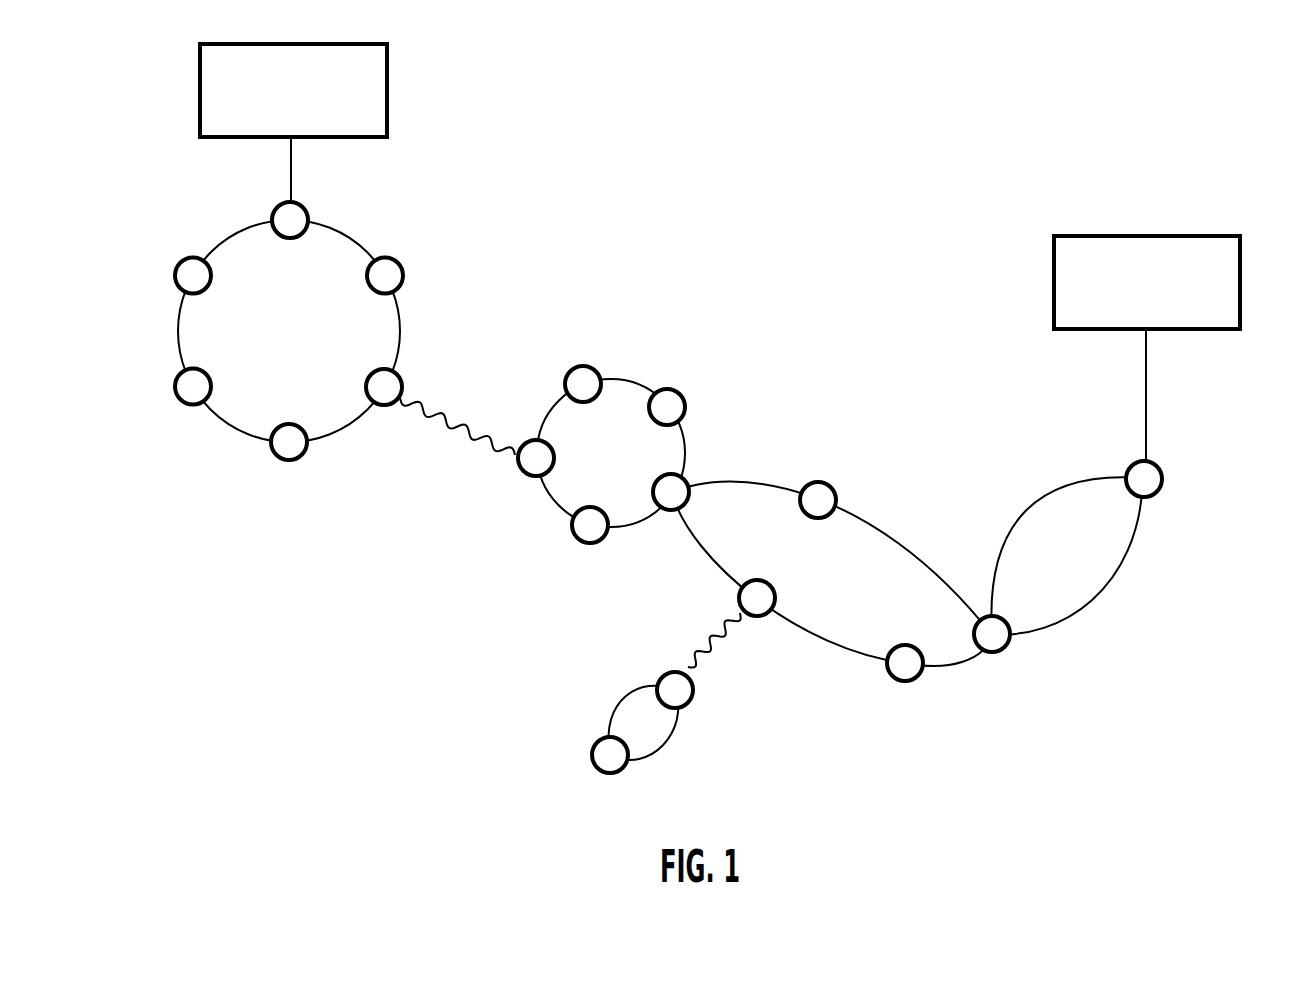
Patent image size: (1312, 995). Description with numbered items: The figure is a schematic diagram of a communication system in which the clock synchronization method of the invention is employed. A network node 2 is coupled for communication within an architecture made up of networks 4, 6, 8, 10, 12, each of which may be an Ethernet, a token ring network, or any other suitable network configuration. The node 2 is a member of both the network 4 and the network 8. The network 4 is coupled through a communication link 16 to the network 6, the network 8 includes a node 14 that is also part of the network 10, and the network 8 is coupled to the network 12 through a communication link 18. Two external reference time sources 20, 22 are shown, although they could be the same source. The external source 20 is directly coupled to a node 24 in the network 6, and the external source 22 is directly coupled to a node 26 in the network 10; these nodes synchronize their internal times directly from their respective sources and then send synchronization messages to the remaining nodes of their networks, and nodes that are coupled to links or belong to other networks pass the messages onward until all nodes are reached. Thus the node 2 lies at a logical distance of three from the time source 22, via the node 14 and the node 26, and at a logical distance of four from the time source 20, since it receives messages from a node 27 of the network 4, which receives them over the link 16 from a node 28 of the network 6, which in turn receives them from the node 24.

The network node 2 is at (667, 513).
The network 4 is at (630, 382).
The network 6 is at (353, 240).
The network 8 is at (877, 527).
The network 10 is at (1063, 507).
The network 12 is at (612, 705).
The node 14 is at (1003, 655).
The communication link 16 is at (475, 425).
The communication link 18 is at (725, 648).
The external reference time source 20 is at (387, 95).
The external reference time source 22 is at (1240, 260).
The node 24 is at (277, 203).
The node 26 is at (1162, 472).
The node 27 is at (533, 477).
The node 28 is at (382, 404).